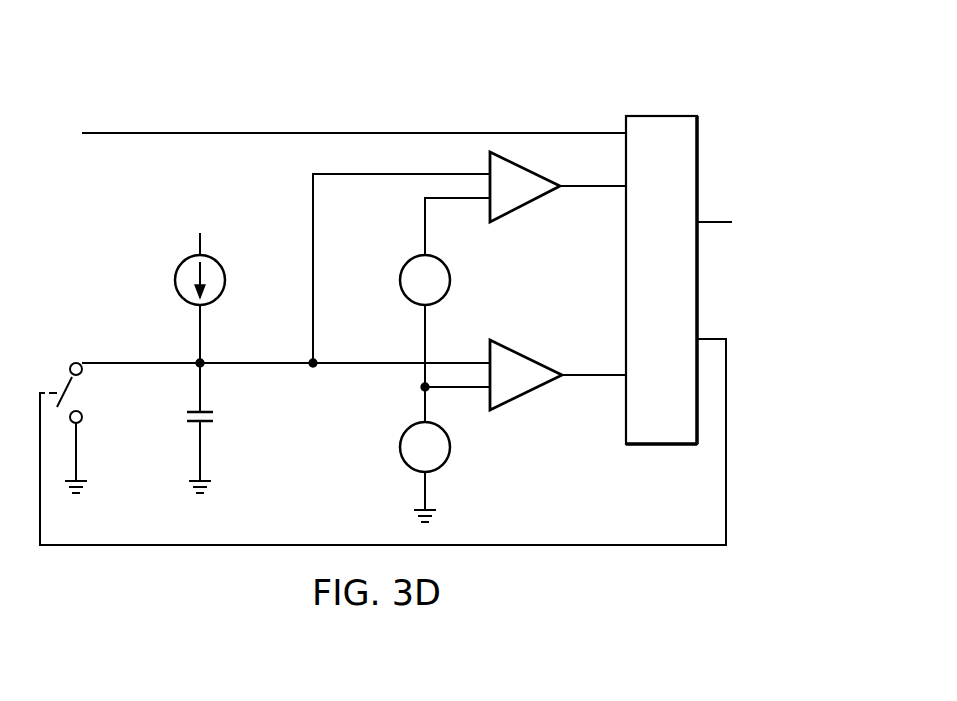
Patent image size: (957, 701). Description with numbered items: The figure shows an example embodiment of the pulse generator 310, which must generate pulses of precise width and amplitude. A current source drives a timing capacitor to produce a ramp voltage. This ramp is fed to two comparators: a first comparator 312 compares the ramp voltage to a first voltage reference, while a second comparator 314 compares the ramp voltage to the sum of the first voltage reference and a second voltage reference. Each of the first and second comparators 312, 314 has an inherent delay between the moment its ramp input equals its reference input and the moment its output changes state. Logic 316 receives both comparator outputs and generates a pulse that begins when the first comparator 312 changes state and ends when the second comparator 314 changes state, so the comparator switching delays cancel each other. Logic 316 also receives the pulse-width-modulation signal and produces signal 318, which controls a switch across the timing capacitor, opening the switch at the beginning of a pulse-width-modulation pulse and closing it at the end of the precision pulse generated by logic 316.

The pulse generator 310 is at (513, 78).
The first comparator 312 is at (527, 397).
The second comparator 314 is at (527, 207).
The logic 316 is at (684, 298).
The signal 318 is at (620, 545).